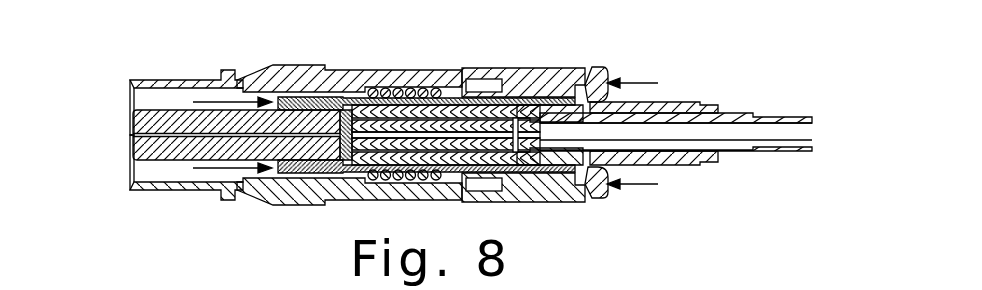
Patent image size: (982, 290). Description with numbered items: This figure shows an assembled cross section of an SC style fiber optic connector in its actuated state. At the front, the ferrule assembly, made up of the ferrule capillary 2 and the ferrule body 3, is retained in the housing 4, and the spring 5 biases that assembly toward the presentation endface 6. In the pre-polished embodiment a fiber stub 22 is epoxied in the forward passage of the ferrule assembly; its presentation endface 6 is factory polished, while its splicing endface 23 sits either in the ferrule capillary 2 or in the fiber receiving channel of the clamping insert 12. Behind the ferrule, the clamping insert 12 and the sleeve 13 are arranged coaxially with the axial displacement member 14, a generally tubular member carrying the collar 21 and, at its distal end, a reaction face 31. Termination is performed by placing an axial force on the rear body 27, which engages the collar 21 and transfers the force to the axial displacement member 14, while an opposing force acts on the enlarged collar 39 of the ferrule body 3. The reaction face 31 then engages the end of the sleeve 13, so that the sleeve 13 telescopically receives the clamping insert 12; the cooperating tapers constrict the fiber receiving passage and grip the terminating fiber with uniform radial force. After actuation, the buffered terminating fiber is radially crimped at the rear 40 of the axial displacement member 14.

The ferrule capillary 2 is at (181, 123).
The ferrule body 3 is at (350, 112).
The housing 4 is at (278, 74).
The spring 5 is at (391, 89).
The presentation endface 6 is at (125, 144).
The clamping insert 12 is at (383, 140).
The sleeve 13 is at (423, 150).
The axial displacement member 14 is at (556, 114).
The collar 21 is at (588, 85).
The fiber stub 22 is at (183, 134).
The splicing endface 23 is at (437, 128).
The rear body 27 is at (592, 187).
The reaction face 31 is at (513, 148).
The enlarged collar 39 is at (287, 167).
The rear 40 is at (770, 115).